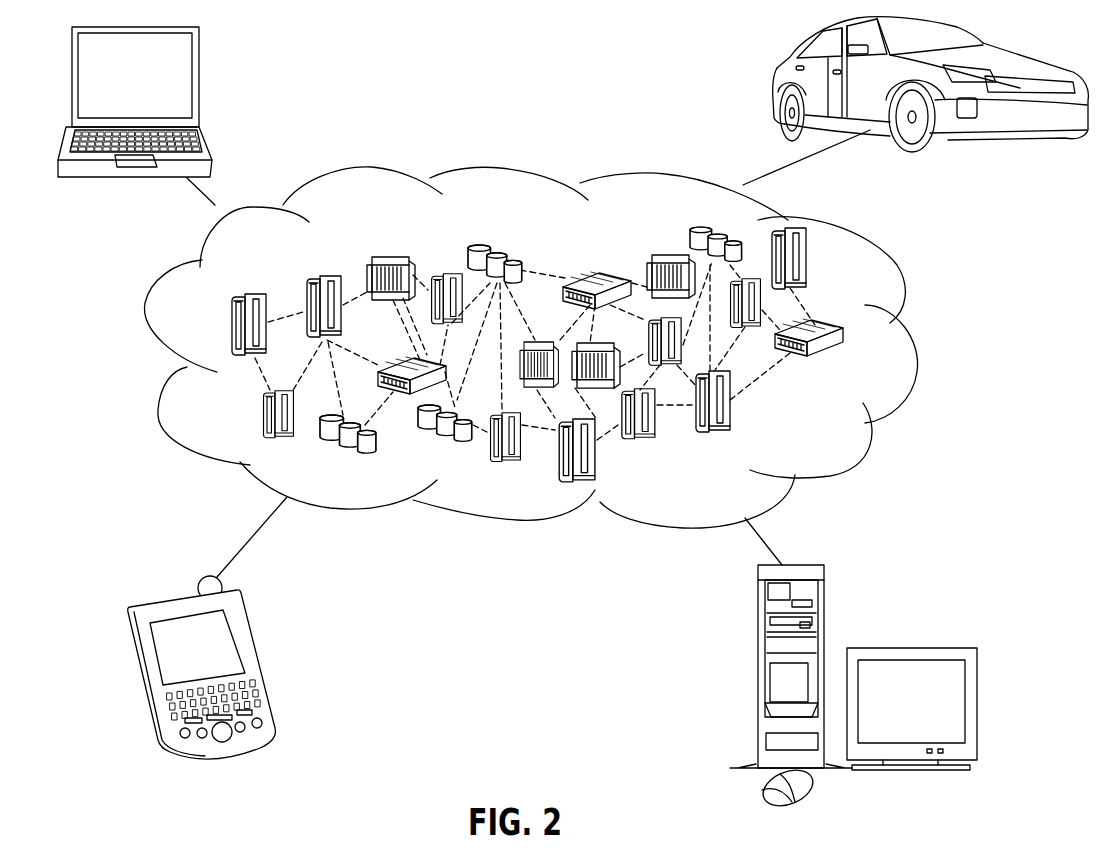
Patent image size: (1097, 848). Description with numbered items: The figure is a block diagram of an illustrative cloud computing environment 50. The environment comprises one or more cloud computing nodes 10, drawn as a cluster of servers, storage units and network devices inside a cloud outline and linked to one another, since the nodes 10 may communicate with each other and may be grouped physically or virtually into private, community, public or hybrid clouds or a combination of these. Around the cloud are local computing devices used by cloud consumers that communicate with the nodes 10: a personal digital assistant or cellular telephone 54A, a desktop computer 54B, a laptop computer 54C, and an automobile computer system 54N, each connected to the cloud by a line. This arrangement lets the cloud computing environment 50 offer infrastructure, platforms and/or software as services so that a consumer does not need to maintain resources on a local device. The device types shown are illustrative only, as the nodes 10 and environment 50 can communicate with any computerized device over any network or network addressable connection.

The cloud computing node 10 is at (826, 427).
The cloud computing environment 50 is at (908, 337).
The personal digital assistant or cellular telephone 54A is at (247, 630).
The desktop computer 54B is at (758, 617).
The laptop computer 54C is at (199, 62).
The automobile computer system 54N is at (770, 78).